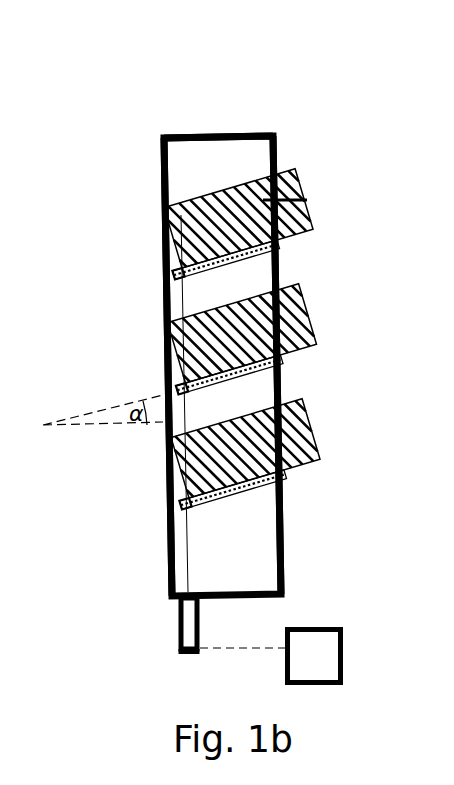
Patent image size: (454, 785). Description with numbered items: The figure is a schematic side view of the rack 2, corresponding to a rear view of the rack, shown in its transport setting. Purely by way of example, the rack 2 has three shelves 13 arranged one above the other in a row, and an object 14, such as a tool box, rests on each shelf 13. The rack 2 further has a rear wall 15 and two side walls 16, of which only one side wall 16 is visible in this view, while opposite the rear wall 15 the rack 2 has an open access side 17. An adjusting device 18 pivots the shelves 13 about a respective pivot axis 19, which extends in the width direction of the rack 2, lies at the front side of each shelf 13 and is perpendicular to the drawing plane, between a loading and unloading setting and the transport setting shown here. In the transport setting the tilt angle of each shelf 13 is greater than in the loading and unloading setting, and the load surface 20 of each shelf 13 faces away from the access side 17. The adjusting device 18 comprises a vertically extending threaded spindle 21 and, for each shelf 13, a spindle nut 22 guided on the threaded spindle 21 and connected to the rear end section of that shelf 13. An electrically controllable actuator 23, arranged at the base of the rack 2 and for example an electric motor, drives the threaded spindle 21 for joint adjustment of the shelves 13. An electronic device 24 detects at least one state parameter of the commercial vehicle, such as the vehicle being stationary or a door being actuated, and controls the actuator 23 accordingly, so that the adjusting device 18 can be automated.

The rack 2 is at (228, 308).
The shelf 13 is at (228, 500).
The object 14 is at (287, 430).
The rear wall 15 is at (163, 294).
The side wall 16 is at (252, 155).
The access side 17 is at (320, 558).
The adjusting device 18 is at (170, 652).
The pivot axis 19 is at (281, 366).
The load surface 20 is at (226, 243).
The threaded spindle 21 is at (189, 551).
The spindle nut 22 is at (171, 503).
The actuator 23 is at (188, 617).
The electronic device 24 is at (322, 656).